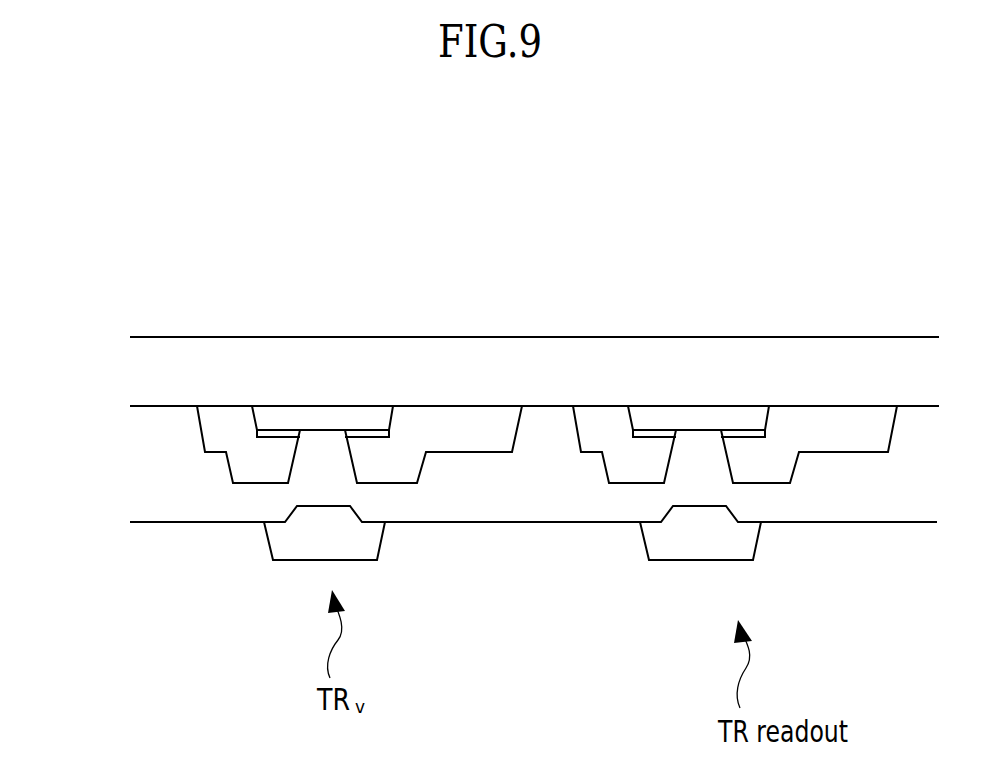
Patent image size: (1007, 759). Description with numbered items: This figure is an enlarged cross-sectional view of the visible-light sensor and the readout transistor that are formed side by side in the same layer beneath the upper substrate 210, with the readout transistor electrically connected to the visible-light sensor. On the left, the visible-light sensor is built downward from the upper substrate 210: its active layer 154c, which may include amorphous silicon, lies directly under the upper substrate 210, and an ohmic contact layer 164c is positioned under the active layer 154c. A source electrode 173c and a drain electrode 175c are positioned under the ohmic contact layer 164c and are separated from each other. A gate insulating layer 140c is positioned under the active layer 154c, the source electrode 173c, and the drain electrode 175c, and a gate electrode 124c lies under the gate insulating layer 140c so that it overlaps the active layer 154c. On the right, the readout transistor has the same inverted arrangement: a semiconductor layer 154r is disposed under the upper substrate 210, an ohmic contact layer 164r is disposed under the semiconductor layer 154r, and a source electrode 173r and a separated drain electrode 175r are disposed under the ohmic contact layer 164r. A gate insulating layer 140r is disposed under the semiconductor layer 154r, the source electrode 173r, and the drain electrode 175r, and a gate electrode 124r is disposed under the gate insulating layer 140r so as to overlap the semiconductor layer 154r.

The upper substrate 210 is at (153, 364).
The gate insulating layer 140c is at (158, 495).
The gate insulating layer 140r is at (877, 502).
The gate electrode 124c is at (288, 547).
The gate electrode 124r is at (666, 545).
The active layer 154c is at (293, 413).
The semiconductor layer 154r is at (703, 413).
The ohmic contact layer 164c is at (370, 418).
The ohmic contact layer 164r is at (750, 418).
The source electrode 173c is at (218, 415).
The source electrode 173r is at (603, 418).
The drain electrode 175c is at (458, 418).
The drain electrode 175r is at (855, 418).